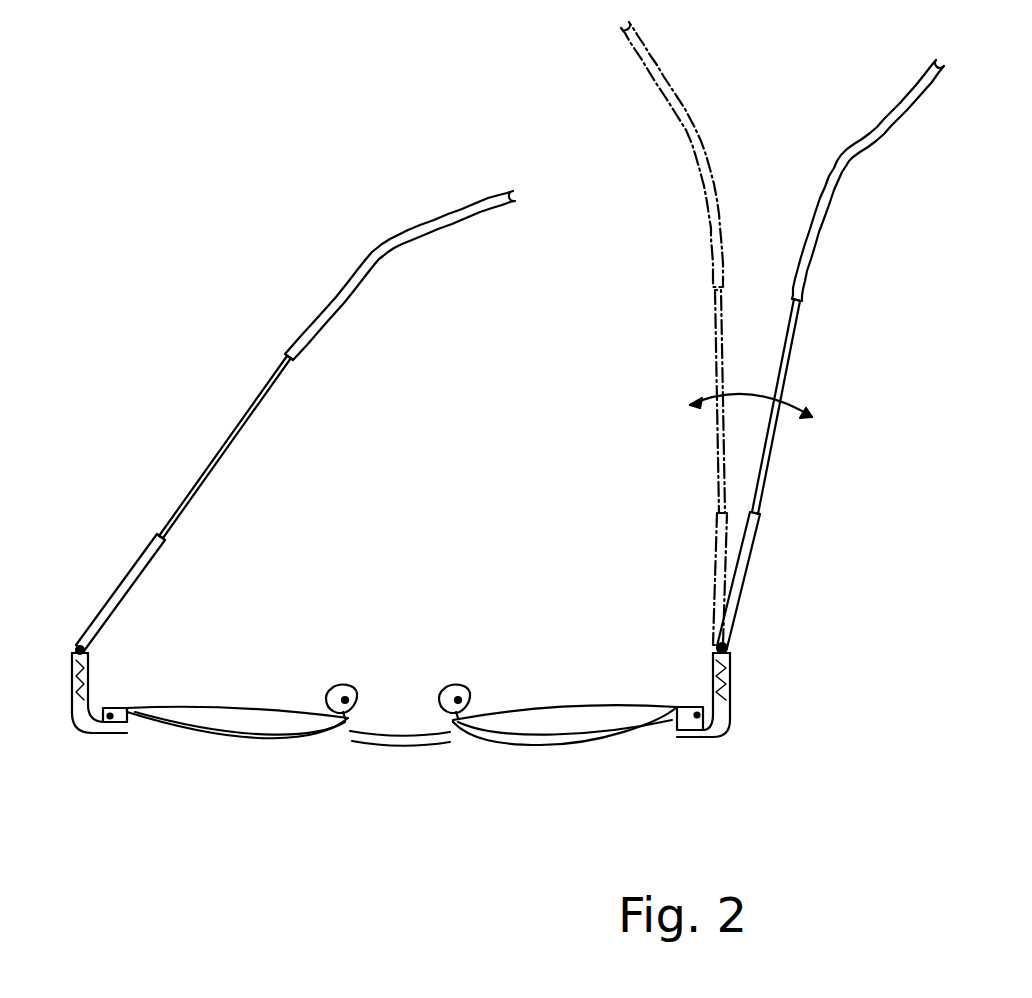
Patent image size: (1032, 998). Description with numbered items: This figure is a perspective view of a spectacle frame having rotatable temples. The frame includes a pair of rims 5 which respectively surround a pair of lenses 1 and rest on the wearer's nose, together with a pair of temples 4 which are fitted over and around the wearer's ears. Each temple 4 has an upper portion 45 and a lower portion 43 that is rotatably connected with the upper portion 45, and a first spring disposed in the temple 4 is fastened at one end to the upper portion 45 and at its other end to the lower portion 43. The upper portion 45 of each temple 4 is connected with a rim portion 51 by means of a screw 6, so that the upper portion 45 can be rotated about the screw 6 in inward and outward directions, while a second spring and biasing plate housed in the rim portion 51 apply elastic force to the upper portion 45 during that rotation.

The lens 1 is at (577, 720).
The rim 5 is at (483, 737).
The temple 4 is at (830, 354).
The lower portion 43 is at (765, 472).
The upper portion 45 is at (747, 580).
The screw 6 is at (730, 647).
The rim portion 51 is at (730, 707).